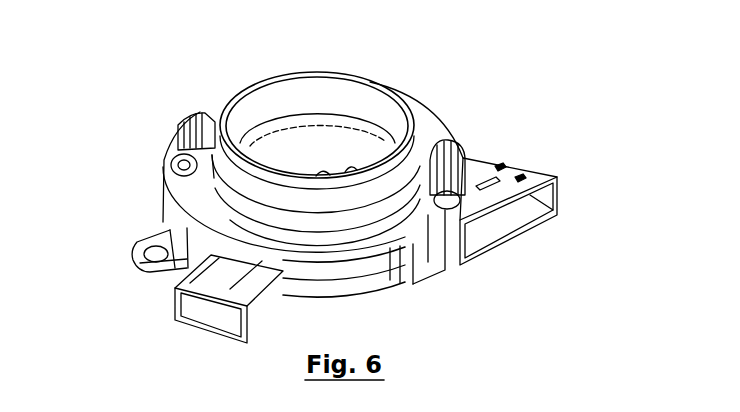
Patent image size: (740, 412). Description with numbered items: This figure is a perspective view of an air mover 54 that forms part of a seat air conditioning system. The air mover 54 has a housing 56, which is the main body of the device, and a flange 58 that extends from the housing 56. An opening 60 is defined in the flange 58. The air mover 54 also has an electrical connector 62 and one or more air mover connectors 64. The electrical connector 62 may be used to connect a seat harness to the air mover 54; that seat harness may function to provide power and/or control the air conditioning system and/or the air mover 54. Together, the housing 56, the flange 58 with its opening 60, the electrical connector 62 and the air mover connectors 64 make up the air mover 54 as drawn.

The air mover 54 is at (174, 98).
The housing 56 is at (442, 125).
The flange 58 is at (247, 178).
The opening 60 is at (310, 122).
The electrical connector 62 is at (213, 309).
The air mover connectors 64 is at (177, 142).